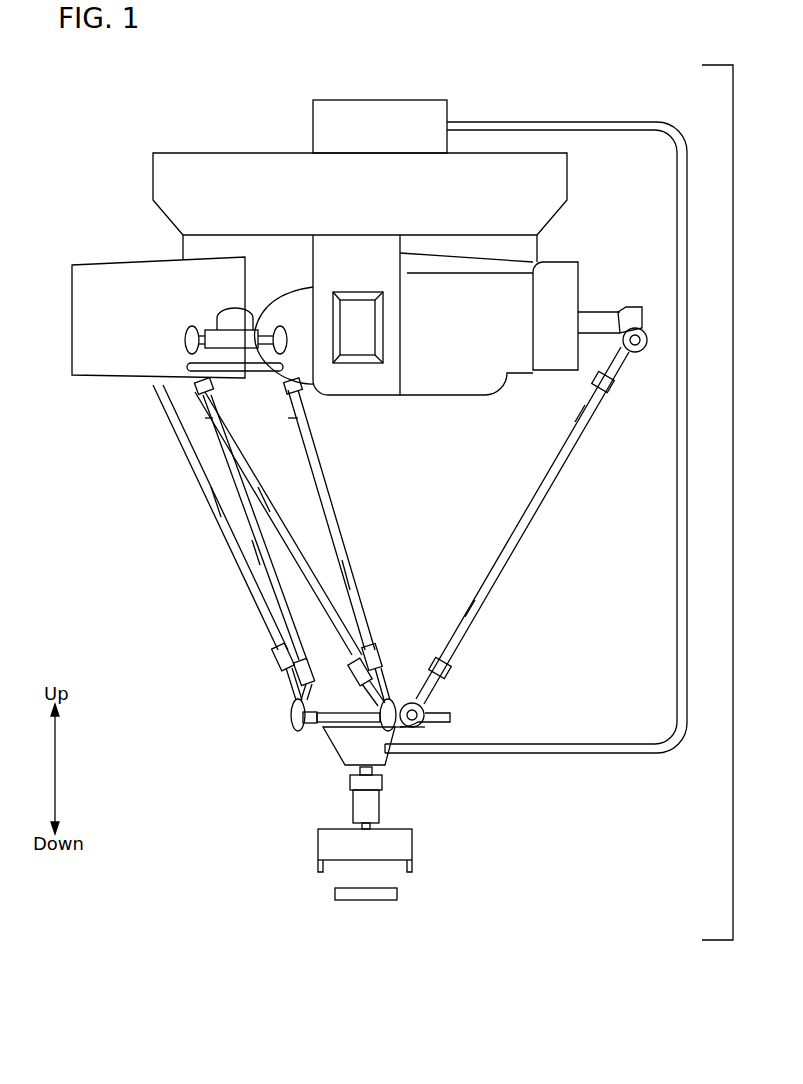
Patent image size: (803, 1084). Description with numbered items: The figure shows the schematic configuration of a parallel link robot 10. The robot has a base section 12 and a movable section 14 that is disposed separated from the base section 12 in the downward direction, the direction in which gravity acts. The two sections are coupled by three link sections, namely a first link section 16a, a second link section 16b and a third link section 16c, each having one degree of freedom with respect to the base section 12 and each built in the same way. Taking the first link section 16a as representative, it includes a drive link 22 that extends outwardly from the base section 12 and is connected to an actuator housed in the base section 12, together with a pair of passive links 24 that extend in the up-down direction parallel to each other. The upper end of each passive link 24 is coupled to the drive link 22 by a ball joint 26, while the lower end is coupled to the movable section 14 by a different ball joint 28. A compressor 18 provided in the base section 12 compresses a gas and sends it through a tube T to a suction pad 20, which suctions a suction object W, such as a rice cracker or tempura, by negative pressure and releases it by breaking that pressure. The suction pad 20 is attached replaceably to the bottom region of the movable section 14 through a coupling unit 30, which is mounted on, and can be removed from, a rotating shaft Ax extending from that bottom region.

The parallel link robot 10 is at (205, 82).
The base section 12 is at (570, 248).
The movable section 14 is at (337, 733).
The first link section 16a is at (110, 418).
The second link section 16b is at (528, 513).
The third link section 16c is at (257, 466).
The compressor 18 is at (364, 100).
The suction pad 20 is at (400, 843).
The drive link 22 is at (222, 311).
The passive links 24 is at (337, 538).
The ball joint 26 is at (282, 358).
The ball joint 28 is at (300, 714).
The coupling unit 30 is at (372, 805).
The tube T is at (588, 122).
The suction object W is at (365, 902).
The rotating shaft Ax is at (357, 770).